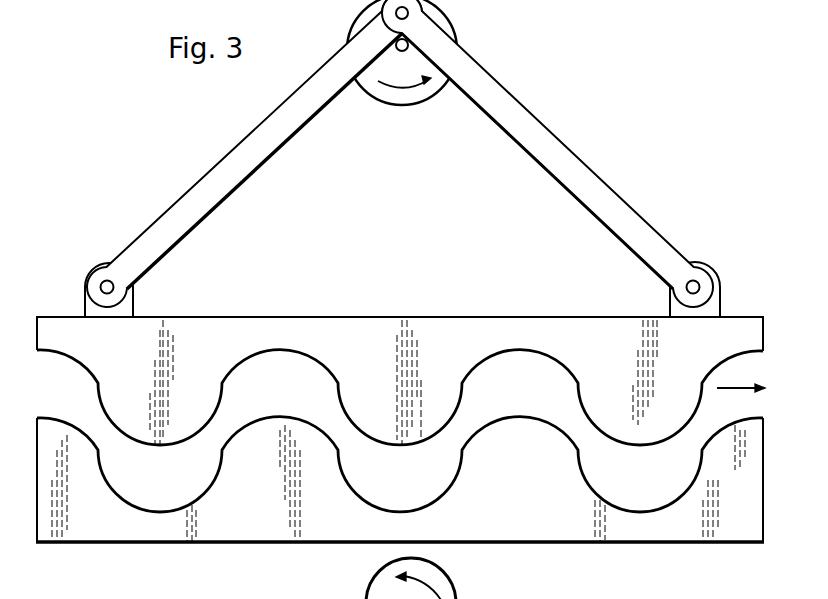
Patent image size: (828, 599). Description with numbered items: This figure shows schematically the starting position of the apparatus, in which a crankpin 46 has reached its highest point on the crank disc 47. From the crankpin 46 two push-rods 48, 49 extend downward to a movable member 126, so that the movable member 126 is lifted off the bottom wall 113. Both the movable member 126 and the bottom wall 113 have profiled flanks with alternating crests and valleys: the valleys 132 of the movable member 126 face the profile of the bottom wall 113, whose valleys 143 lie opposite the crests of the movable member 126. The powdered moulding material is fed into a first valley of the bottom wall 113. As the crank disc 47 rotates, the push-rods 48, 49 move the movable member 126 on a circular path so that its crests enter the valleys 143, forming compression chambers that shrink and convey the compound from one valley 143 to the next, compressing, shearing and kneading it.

The crankpin 46 is at (408, 14).
The crank disc 47 is at (349, 27).
The push-rod 48 is at (236, 145).
The push-rod 49 is at (553, 133).
The movable member 126 is at (400, 361).
The valley of the movable member 132 is at (280, 350).
The valley of the bottom wall 143 is at (157, 511).
The bottom wall 113 is at (400, 506).